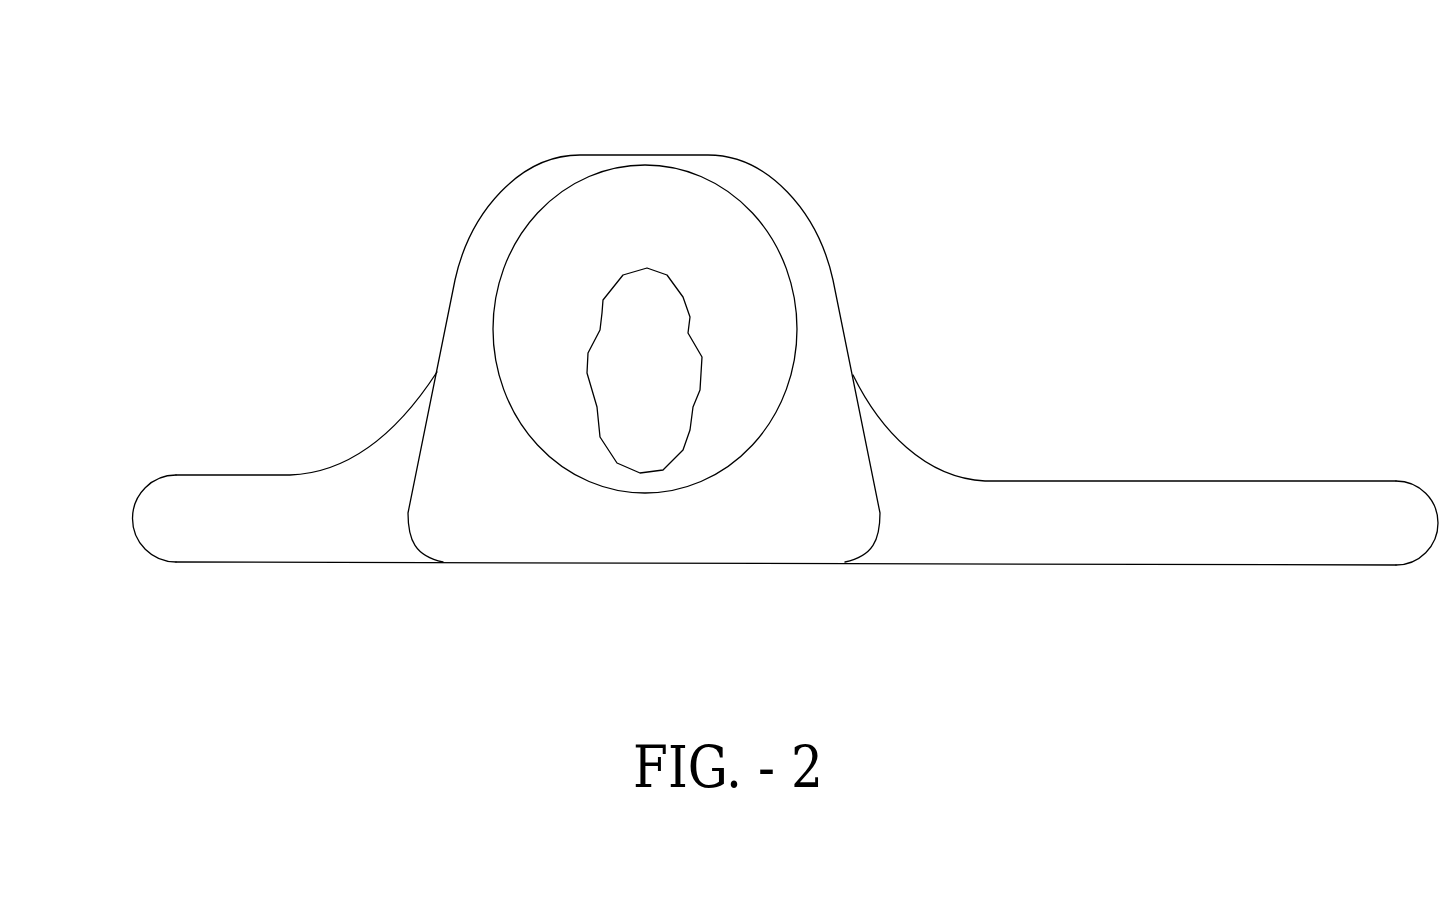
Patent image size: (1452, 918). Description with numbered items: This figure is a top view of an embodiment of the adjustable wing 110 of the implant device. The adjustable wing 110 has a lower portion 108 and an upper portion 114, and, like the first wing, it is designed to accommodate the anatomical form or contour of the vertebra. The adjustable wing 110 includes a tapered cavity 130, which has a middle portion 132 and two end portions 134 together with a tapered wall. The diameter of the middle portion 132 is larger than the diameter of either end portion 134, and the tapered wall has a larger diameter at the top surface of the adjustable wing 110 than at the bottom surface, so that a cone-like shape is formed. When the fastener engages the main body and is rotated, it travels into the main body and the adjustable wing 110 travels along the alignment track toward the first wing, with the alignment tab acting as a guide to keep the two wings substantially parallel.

The adjustable wing 110 is at (786, 304).
The lower portion 108 is at (253, 485).
The upper portion 114 is at (1258, 500).
The tapered cavity 130 is at (745, 253).
The middle portion 132 is at (702, 358).
The end portions 134 is at (598, 425).